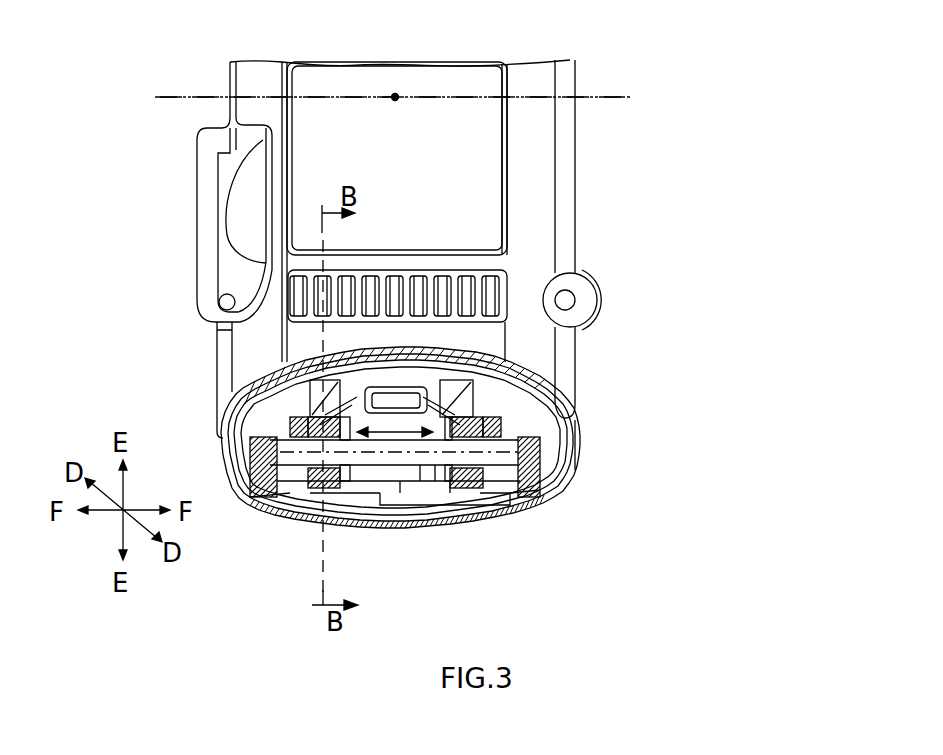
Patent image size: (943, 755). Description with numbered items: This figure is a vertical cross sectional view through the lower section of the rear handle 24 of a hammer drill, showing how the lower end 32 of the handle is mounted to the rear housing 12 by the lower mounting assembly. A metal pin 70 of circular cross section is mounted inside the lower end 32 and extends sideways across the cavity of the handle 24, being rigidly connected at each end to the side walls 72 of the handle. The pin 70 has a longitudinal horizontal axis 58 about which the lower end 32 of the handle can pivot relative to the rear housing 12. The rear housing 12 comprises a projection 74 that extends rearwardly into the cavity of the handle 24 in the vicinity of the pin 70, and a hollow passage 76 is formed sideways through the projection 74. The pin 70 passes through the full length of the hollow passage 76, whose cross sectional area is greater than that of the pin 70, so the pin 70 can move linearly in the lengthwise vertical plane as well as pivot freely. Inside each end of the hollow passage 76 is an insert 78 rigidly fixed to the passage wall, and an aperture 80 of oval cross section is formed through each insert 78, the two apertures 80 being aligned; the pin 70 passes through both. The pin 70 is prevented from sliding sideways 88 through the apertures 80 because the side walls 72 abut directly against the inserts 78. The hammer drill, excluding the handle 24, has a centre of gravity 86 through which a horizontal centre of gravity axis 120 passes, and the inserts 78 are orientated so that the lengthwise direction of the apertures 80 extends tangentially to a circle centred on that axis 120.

The rear housing 12 is at (265, 352).
The rear handle 24 is at (572, 452).
The lower end 32 is at (290, 386).
The horizontal axis 58 is at (545, 432).
The pin 70 is at (390, 441).
The side walls 72 is at (522, 492).
The projection 74 is at (478, 388).
The hollow passage 76 is at (450, 503).
The insert 78 is at (315, 490).
The aperture 80 is at (313, 435).
The centre of gravity 86 is at (398, 99).
The sideways sliding direction 88 is at (427, 468).
The centre of gravity axis 120 is at (308, 97).